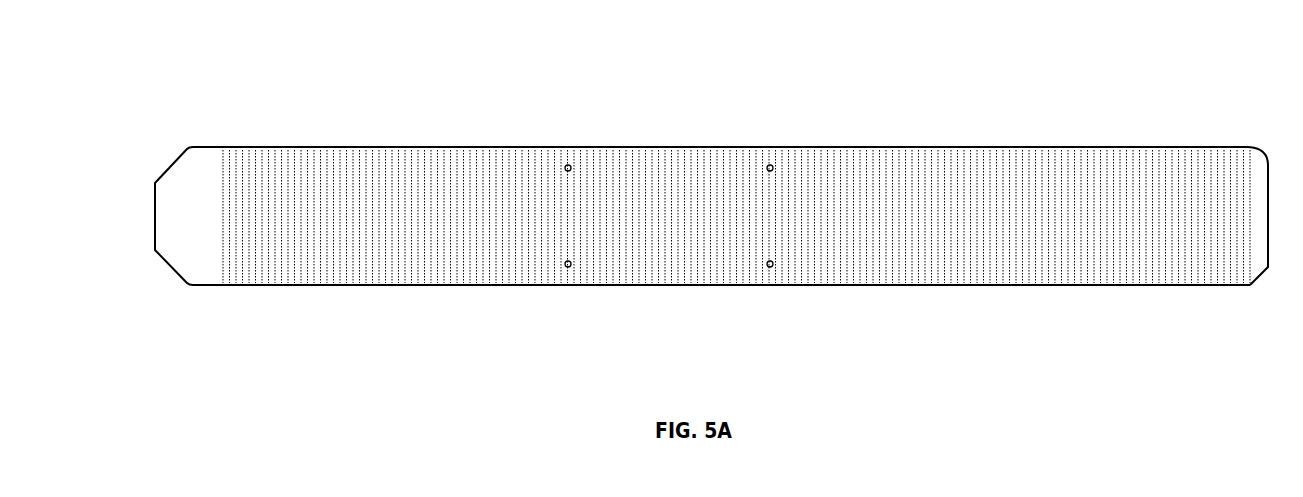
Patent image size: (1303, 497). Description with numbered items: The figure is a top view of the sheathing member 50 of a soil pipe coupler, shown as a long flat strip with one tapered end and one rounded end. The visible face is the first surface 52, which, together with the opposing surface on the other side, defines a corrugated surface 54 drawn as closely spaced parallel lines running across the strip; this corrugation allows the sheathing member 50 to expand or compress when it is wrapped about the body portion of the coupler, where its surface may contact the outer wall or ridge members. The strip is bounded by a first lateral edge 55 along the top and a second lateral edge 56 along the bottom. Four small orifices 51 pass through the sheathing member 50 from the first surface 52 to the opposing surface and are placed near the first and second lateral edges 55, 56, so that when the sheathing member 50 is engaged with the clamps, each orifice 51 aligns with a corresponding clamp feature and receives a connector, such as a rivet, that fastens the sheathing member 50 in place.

The sheathing member 50 is at (694, 205).
The orifice 51 is at (568, 160).
The first surface 52 is at (203, 243).
The corrugated surface 54 is at (393, 240).
The first lateral edge 55 is at (1003, 147).
The second lateral edge 56 is at (993, 287).